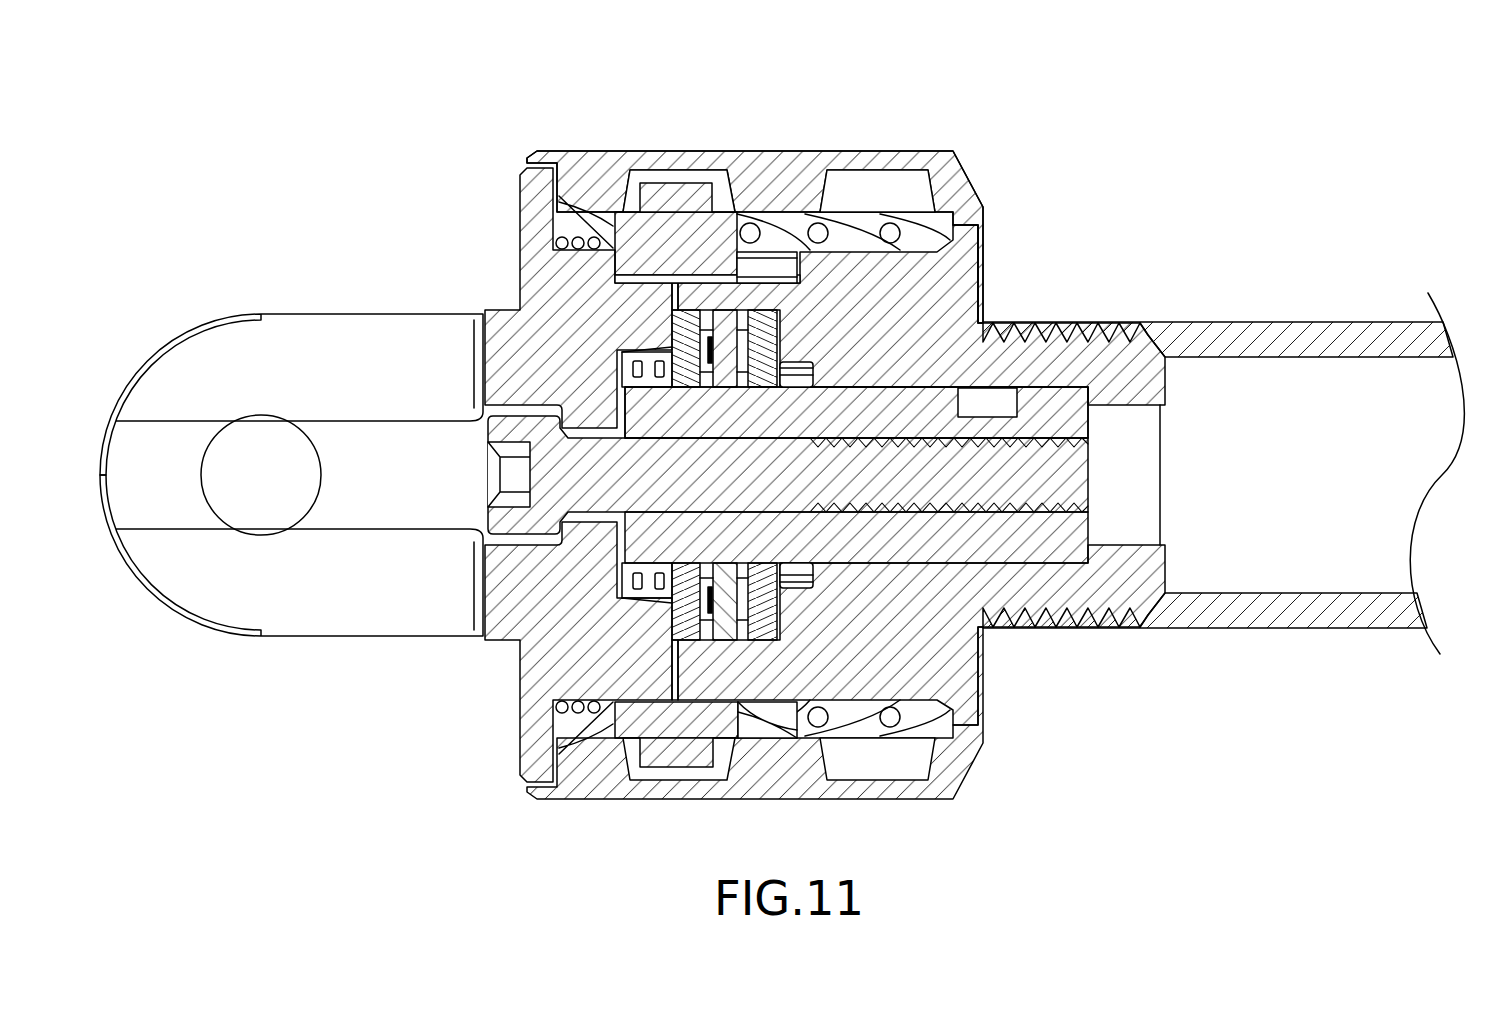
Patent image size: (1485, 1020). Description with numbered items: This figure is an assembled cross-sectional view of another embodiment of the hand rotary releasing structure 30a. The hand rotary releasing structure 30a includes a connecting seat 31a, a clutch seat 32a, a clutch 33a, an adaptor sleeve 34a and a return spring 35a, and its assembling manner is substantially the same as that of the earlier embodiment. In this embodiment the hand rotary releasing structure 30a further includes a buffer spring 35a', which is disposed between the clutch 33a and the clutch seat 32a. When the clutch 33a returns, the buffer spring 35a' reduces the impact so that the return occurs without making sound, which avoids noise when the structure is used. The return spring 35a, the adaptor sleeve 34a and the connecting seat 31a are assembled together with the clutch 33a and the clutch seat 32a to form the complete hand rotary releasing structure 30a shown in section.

The hand rotary releasing structure 30a is at (526, 132).
The connecting seat 31a is at (935, 285).
The clutch seat 32a is at (545, 265).
The clutch 33a is at (668, 230).
The adaptor sleeve 34a is at (775, 152).
The return spring 35a is at (857, 398).
The buffer spring 35a' is at (584, 419).